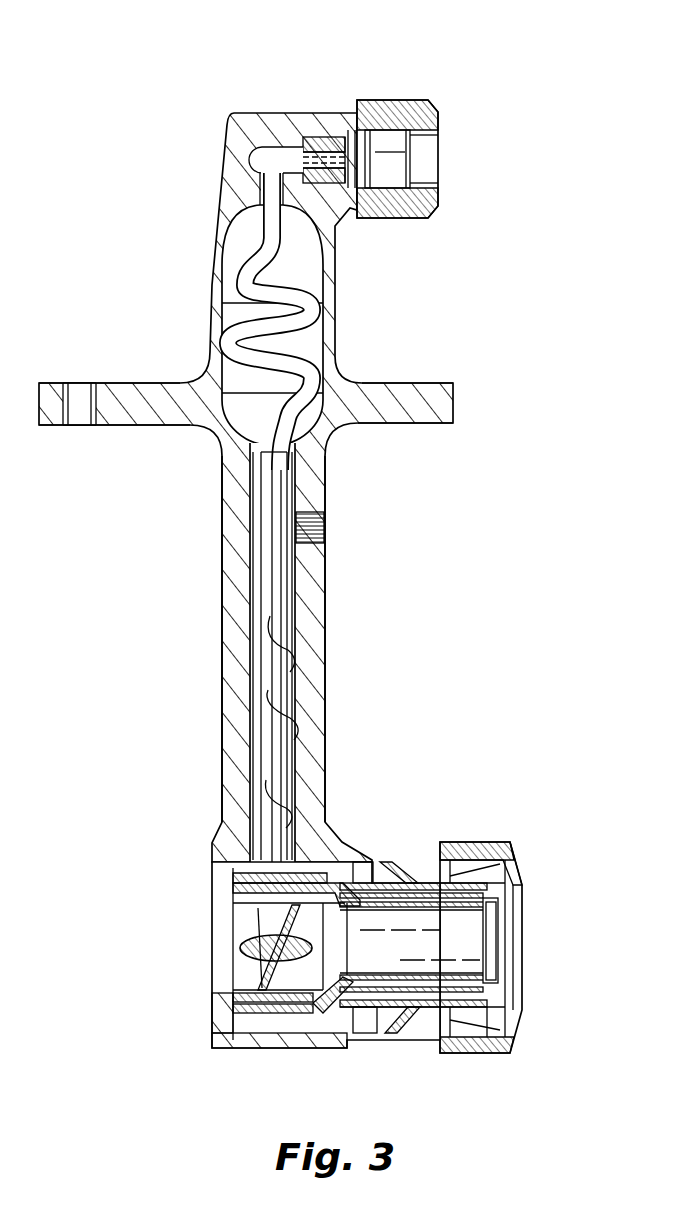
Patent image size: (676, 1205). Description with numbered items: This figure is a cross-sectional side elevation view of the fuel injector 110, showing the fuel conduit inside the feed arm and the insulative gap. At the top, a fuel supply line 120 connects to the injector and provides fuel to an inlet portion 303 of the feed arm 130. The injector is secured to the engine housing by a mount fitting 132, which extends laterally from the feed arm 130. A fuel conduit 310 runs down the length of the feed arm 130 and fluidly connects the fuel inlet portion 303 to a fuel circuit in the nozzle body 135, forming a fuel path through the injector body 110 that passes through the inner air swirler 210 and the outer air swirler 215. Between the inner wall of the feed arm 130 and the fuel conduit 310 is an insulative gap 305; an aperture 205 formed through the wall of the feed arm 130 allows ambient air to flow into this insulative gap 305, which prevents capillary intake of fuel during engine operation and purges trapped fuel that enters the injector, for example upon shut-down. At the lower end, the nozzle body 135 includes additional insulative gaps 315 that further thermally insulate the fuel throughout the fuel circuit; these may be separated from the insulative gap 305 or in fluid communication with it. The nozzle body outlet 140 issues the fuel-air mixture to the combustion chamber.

The fuel injector 110 is at (130, 92).
The fuel supply line 120 is at (428, 150).
The feed arm 130 is at (222, 680).
The mount fitting 132 is at (128, 383).
The nozzle body 135 is at (345, 855).
The nozzle body outlet 140 is at (537, 926).
The aperture 205 is at (316, 528).
The inner air swirler 210 is at (242, 950).
The outer air swirler 215 is at (487, 843).
The inlet portion 303 is at (255, 190).
The insulative gap 305 is at (290, 478).
The fuel conduit 310 is at (270, 545).
The additional insulative gaps 315 is at (393, 880).